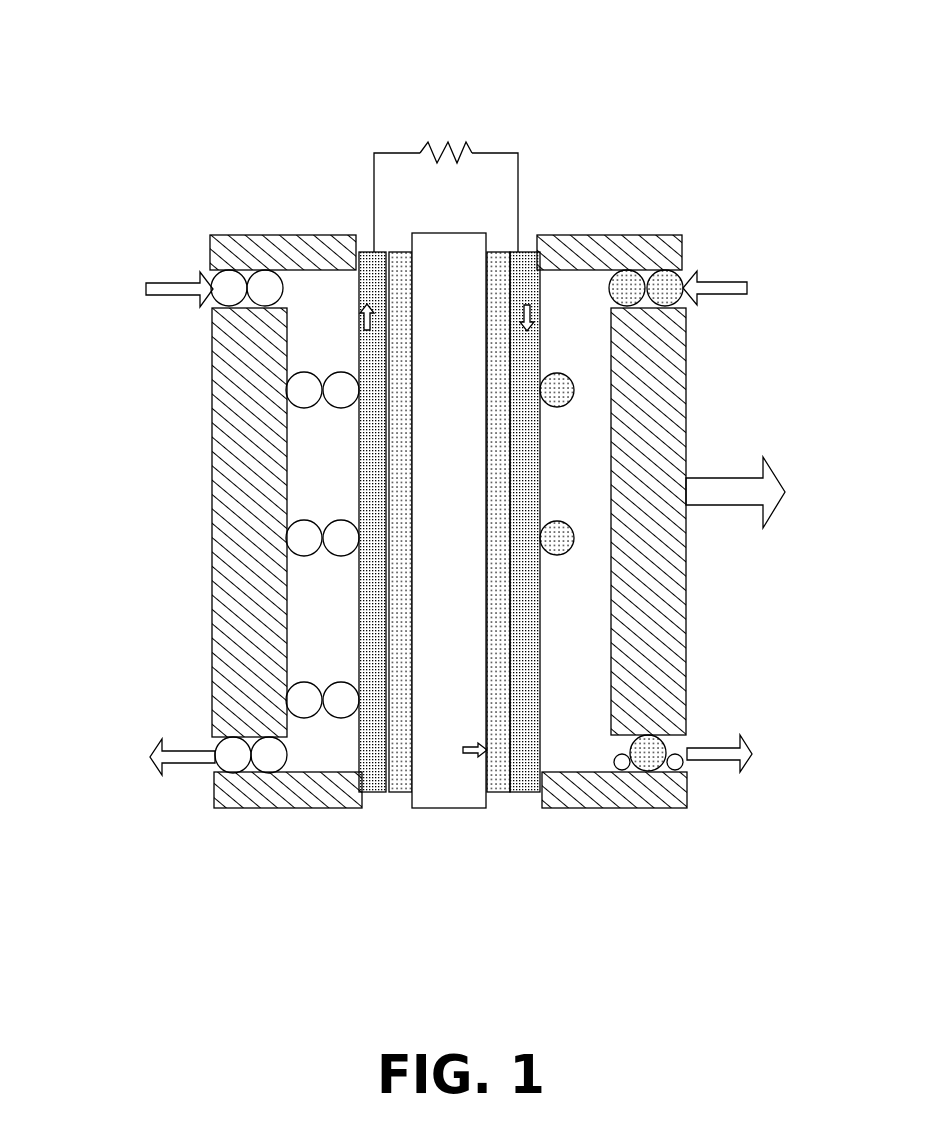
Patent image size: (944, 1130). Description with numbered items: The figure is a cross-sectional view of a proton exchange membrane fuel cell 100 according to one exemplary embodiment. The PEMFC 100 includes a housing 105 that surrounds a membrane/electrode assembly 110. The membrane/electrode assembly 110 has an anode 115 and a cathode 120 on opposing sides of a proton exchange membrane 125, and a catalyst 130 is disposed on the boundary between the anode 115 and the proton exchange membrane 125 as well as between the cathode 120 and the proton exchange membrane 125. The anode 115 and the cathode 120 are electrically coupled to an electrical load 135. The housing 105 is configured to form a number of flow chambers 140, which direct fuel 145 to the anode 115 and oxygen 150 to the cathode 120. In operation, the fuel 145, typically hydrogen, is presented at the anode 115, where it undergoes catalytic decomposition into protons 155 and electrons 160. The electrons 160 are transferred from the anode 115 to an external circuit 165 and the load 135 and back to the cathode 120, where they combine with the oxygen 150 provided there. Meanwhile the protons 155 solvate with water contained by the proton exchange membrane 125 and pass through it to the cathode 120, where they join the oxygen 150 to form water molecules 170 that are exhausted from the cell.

The proton exchange membrane fuel cell 100 is at (449, 495).
The housing 105 is at (268, 235).
The membrane/electrode assembly 110 is at (501, 551).
The anode 115 is at (380, 777).
The cathode 120 is at (526, 775).
The proton exchange membrane 125 is at (472, 778).
The catalyst 130 is at (405, 772).
The electrical load 135 is at (447, 126).
The flow chambers 140 is at (306, 461).
The fuel 145 is at (227, 288).
The oxygen 150 is at (667, 285).
The protons 155 is at (446, 766).
The electrons 160 is at (508, 120).
The external circuit 165 is at (374, 195).
The water molecules 170 is at (686, 765).